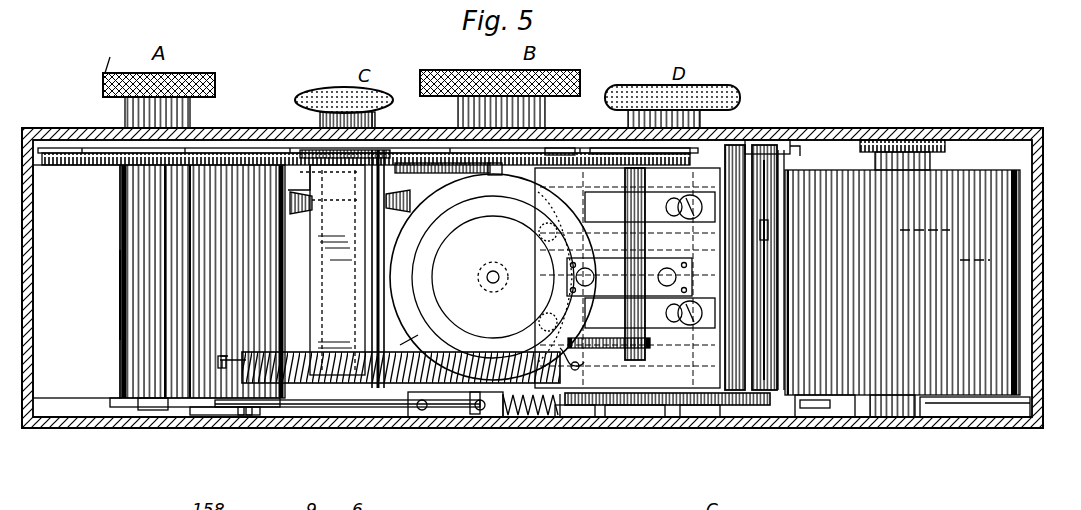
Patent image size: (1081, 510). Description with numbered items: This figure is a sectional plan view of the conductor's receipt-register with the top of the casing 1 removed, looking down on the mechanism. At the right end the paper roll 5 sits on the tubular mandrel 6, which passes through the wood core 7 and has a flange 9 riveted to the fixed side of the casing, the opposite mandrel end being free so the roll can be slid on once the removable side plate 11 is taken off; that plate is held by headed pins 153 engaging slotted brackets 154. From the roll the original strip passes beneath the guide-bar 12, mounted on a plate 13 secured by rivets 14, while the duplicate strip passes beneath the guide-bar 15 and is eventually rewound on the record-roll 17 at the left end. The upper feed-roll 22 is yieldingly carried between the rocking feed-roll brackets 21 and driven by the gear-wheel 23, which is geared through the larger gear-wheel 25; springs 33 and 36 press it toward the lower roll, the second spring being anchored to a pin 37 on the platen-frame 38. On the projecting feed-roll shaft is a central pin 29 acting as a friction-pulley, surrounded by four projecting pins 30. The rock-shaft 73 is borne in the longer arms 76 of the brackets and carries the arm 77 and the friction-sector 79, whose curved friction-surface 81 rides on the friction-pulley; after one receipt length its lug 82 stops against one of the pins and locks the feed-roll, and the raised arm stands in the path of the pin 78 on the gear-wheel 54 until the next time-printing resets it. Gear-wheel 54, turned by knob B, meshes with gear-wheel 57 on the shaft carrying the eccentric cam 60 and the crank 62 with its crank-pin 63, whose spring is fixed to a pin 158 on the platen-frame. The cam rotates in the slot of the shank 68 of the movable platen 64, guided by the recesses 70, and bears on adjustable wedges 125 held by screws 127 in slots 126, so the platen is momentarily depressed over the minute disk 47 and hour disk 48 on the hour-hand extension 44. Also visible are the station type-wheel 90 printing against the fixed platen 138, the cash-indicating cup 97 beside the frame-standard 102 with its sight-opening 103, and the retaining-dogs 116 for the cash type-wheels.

The casing 1 is at (996, 130).
The roll 5 is at (870, 252).
The tubular mandrel 6 is at (932, 163).
The wood core 7 is at (930, 410).
The flange 9 is at (922, 146).
The side plate 11 is at (520, 428).
The roller or bar 12 is at (738, 165).
The plate 13 is at (772, 150).
The rivets 14 is at (796, 150).
The guide-bar 15 is at (796, 146).
The spool or roll 17 is at (120, 291).
The feed-roll brackets 21 is at (256, 153).
The feed-roll 22 is at (206, 225).
The gear-wheel 23 is at (200, 153).
The gear-wheel 25 is at (76, 281).
The central pin 29 is at (228, 410).
The projecting pins 30 is at (210, 410).
The coiled spring 33 is at (402, 160).
The spring 36 is at (455, 385).
The pin 37 is at (478, 412).
The platen-frame 38 is at (483, 470).
The extension 44 is at (497, 275).
The circular disk 47 is at (493, 277).
The circular disk 48 is at (401, 342).
The gear-wheel 54 is at (554, 150).
The gear-wheel 57 is at (598, 150).
The eccentric cam 60 is at (644, 252).
The crank 62 is at (610, 356).
The crank-pin 63 is at (584, 370).
The movable platen 64 is at (560, 205).
The shank 68 is at (629, 277).
The guide-recesses 70 is at (592, 278).
The rock-shaft 73 is at (372, 297).
The longer arms 76 is at (378, 128).
The arm 77 is at (414, 196).
The pin 78 is at (503, 170).
The friction-sector 79 is at (286, 408).
The curved friction-surface 81 is at (243, 416).
The projecting lug 82 is at (250, 416).
The station type-wheel 90 is at (296, 216).
The annular cup 97 is at (580, 408).
The frame-standard 102 is at (640, 415).
The sight-opening 103 is at (700, 417).
The retaining-dogs 116 is at (768, 208).
The wedges 125 is at (672, 198).
The slots 126 is at (664, 330).
The screws 127 is at (690, 222).
The fixed platen 138 is at (332, 270).
The headed pins 153 is at (812, 406).
The slotted brackets 154 is at (846, 412).
The pin 158 is at (380, 360).